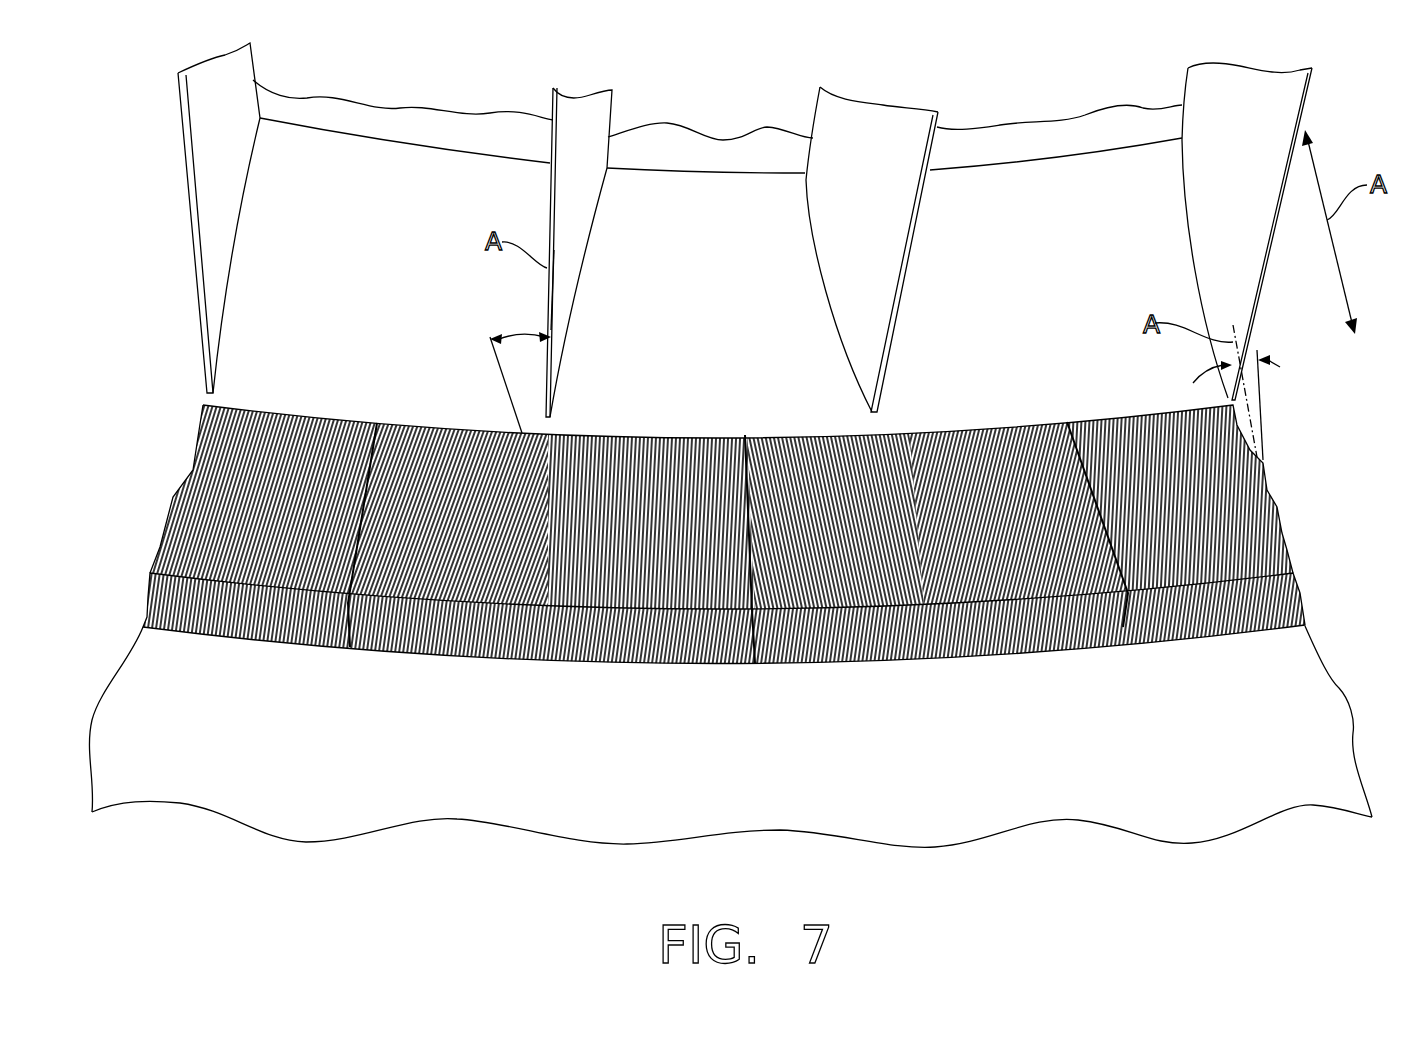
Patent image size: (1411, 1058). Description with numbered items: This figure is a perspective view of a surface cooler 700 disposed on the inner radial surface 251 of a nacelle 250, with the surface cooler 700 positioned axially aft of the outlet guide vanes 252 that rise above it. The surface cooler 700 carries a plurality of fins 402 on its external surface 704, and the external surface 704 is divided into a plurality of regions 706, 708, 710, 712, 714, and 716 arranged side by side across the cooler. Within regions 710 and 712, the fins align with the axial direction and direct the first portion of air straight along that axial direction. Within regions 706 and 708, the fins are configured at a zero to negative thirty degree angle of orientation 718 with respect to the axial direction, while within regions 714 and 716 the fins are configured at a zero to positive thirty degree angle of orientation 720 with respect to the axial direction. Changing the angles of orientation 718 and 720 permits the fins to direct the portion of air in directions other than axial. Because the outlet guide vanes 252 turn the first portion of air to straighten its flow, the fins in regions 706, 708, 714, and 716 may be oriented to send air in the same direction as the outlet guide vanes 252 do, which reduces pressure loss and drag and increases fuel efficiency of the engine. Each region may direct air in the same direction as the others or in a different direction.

The nacelle 250 is at (1235, 654).
The inner radial surface 251 is at (705, 200).
The outlet guide vanes 252 is at (217, 95).
The plurality of fins 402 is at (722, 543).
The surface cooler 700 is at (211, 829).
The external surface 704 is at (248, 607).
The region 706 is at (242, 468).
The region 708 is at (455, 437).
The region 710 is at (630, 467).
The region 712 is at (835, 460).
The region 714 is at (987, 430).
The region 716 is at (1235, 523).
The angle of orientation 718 is at (523, 330).
The angle of orientation 720 is at (1280, 367).